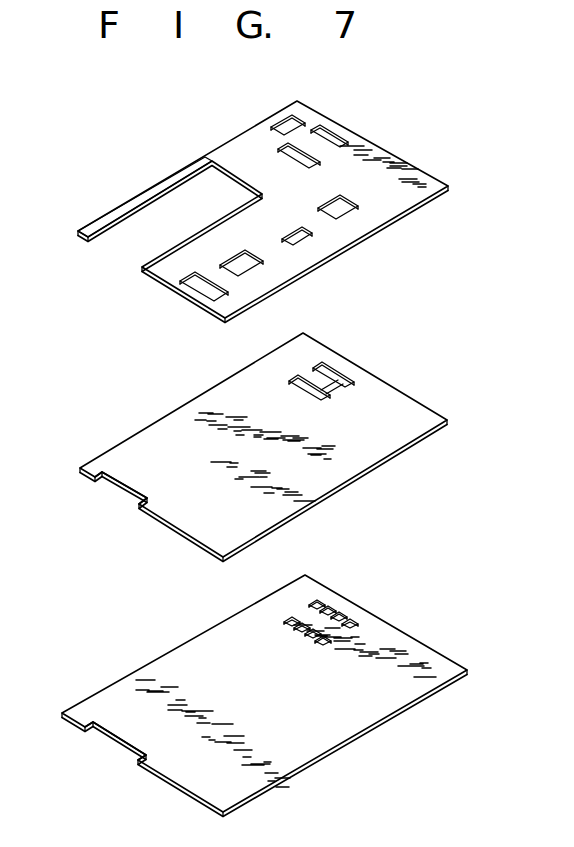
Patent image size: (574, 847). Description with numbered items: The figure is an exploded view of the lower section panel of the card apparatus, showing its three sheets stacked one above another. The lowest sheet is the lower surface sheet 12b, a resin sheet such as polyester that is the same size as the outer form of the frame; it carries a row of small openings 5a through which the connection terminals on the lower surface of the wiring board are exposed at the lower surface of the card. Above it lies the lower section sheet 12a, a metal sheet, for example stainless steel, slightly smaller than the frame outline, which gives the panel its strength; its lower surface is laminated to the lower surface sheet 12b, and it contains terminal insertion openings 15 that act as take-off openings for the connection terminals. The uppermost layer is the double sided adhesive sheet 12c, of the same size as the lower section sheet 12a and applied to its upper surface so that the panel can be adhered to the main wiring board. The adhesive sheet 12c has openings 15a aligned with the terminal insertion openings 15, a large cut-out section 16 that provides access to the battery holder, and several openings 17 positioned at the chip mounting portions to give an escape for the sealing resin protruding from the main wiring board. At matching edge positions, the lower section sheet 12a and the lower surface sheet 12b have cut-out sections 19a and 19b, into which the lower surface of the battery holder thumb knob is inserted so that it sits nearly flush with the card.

The lower section sheet 12a is at (428, 414).
The lower surface sheet 12b is at (437, 665).
The double sided adhesive sheet 12c is at (417, 180).
The terminal insertion openings 15 is at (347, 378).
The openings 15a is at (344, 134).
The cut-out section 16 is at (136, 203).
The openings 17 is at (303, 117).
The cut-out section 19a is at (126, 484).
The cut-out section 19b is at (118, 740).
The openings 5a is at (351, 611).